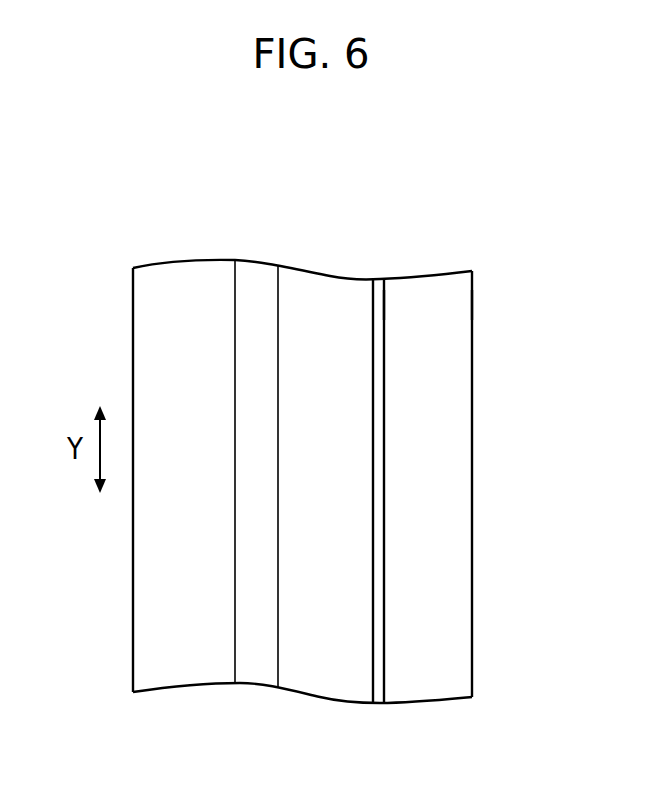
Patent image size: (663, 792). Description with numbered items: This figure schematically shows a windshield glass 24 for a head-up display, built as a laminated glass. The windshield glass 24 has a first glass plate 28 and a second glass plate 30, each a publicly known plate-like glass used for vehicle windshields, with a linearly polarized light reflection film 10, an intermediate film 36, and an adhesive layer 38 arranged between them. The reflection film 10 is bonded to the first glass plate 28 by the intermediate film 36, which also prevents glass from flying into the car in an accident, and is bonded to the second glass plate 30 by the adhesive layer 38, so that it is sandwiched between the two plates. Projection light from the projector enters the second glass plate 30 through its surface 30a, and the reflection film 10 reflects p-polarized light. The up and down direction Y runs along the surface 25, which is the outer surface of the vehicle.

The linearly polarized light reflection film 10 is at (329, 265).
The windshield glass 24 is at (462, 214).
The surface 25 is at (100, 571).
The first glass plate 28 is at (148, 331).
The second glass plate 30 is at (457, 330).
The surface of the second glass plate 30a is at (473, 410).
The intermediate film 36 is at (270, 292).
The adhesive layer 38 is at (379, 291).